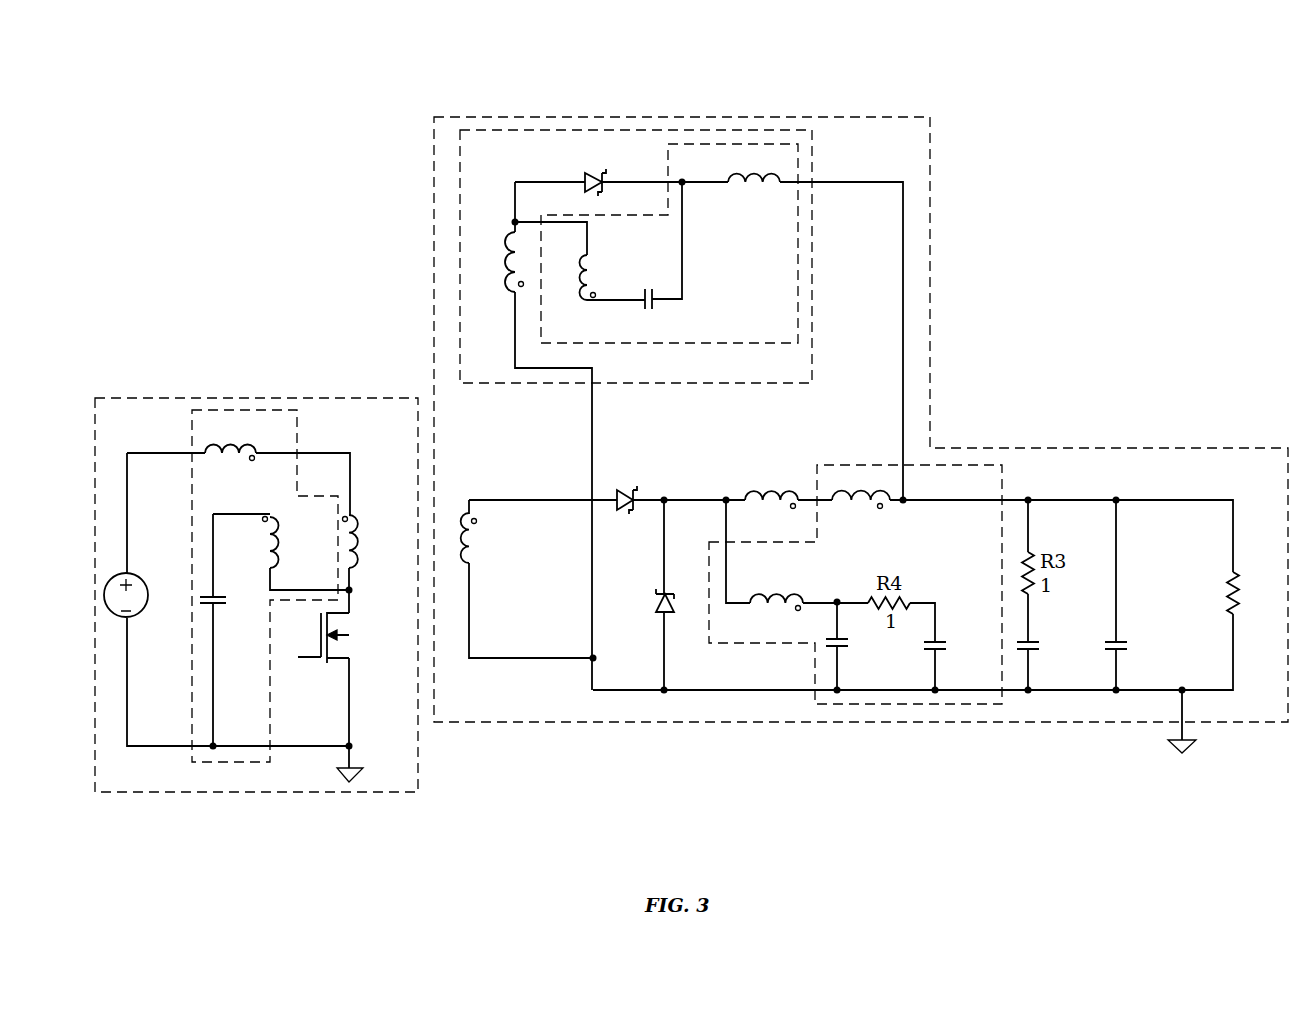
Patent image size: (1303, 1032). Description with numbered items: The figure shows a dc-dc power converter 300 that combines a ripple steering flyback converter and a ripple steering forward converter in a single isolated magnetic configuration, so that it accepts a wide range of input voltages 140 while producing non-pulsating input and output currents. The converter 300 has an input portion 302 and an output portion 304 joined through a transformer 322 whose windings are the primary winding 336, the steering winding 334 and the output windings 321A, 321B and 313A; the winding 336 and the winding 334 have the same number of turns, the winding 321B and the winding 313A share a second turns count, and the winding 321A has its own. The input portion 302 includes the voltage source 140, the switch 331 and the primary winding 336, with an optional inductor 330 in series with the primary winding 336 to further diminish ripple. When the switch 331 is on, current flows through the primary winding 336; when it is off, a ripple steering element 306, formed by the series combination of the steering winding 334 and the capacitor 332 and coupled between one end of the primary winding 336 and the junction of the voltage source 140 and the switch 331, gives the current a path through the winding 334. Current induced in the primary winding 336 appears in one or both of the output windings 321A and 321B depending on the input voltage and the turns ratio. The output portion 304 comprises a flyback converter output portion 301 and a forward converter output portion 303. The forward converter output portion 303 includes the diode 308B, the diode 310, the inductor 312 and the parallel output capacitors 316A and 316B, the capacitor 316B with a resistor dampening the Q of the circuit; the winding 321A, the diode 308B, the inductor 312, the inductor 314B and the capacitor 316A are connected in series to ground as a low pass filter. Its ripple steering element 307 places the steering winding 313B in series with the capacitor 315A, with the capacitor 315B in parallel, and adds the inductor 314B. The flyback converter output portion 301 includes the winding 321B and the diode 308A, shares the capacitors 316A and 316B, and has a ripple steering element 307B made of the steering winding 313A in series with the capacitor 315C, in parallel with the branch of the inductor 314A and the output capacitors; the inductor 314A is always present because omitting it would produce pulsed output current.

The dc-dc converter 300 is at (1035, 286).
The flyback converter output portion 301 is at (812, 266).
The input portion 302 is at (120, 398).
The forward converter output portion 303 is at (1150, 540).
The output portion 304 is at (930, 158).
The ripple steering element 306 is at (230, 763).
The ripple steering element 307 is at (965, 705).
The ripple steering element 307B is at (688, 144).
The diode 308A is at (585, 177).
The diode 308B is at (640, 490).
The diode 310 is at (660, 614).
The inductor 312 is at (745, 490).
The inductor 313A is at (581, 256).
The inductor 313B is at (755, 606).
The inductor 314A is at (777, 173).
The inductor 314B is at (885, 488).
The capacitor 315A is at (830, 650).
The capacitor 315B is at (930, 652).
The capacitor 315C is at (655, 294).
The capacitor 316A is at (1105, 655).
The capacitor 316B is at (1020, 652).
The inductor 321A is at (473, 557).
The inductor 321B is at (507, 237).
The transformer 322 is at (408, 336).
The inductor 330 is at (206, 442).
The switch 331 is at (350, 658).
The capacitor 332 is at (212, 606).
The inductor 334 is at (274, 514).
The inductor 336 is at (353, 512).
The voltage source 140 is at (129, 575).